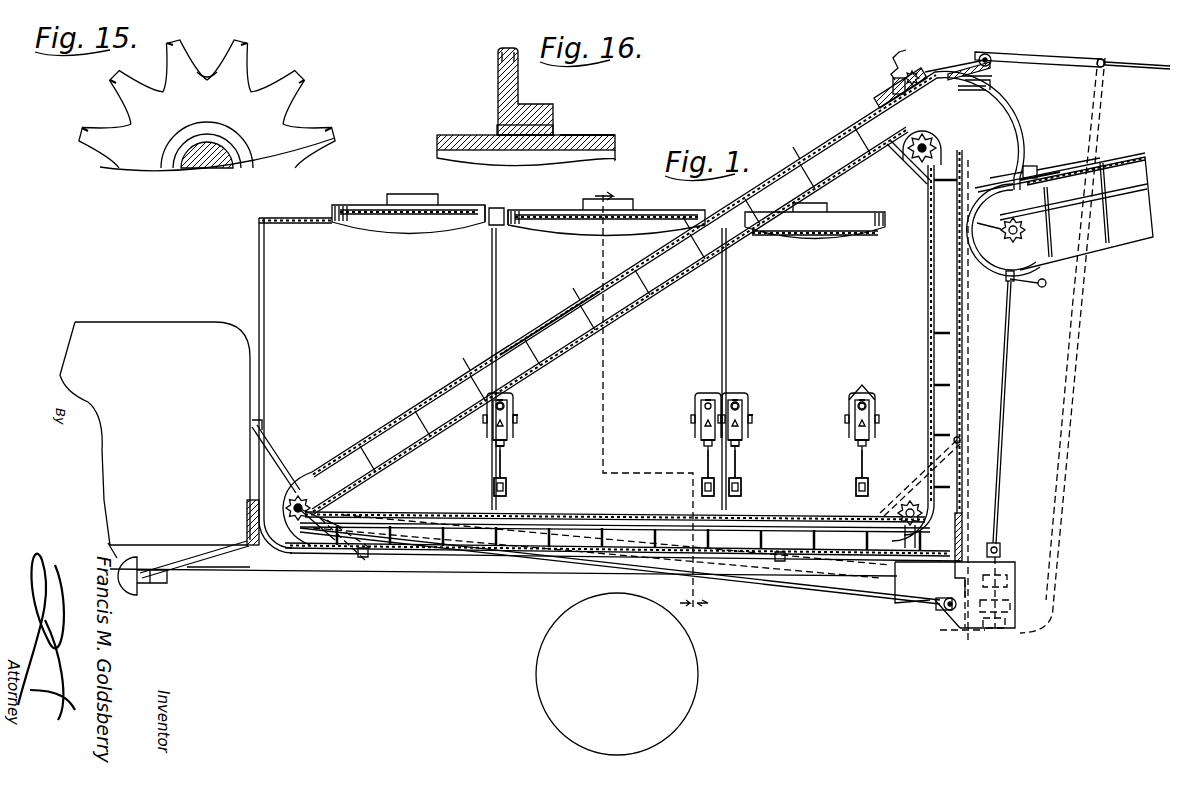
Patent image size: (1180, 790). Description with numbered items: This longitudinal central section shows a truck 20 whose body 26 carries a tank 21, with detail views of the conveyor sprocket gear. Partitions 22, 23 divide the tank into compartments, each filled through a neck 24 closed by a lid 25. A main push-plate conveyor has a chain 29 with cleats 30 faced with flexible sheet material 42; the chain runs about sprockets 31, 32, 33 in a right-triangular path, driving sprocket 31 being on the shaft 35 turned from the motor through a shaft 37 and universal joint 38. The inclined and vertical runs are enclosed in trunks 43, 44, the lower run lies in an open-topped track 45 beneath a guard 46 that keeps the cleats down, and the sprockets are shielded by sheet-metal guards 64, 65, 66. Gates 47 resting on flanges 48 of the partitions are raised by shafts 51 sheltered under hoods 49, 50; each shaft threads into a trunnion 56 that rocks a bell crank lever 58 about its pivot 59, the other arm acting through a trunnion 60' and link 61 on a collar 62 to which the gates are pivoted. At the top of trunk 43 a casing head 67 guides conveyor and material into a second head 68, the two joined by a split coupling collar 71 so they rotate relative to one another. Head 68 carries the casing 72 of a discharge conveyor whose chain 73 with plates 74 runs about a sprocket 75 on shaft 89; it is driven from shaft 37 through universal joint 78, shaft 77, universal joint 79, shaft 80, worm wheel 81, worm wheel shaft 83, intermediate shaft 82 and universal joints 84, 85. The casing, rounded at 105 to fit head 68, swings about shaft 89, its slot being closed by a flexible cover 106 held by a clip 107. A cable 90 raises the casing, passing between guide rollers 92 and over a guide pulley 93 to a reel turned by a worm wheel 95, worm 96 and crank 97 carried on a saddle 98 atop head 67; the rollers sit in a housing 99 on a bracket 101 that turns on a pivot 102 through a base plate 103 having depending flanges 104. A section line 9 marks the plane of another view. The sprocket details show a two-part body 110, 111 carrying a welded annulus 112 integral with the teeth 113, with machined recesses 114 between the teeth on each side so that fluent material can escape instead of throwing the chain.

In FIG. 1, the section line 9- 9 is at (651, 402).
In FIG. 1, the truck 20 is at (108, 332).
In FIG. 1, the tank 21 is at (259, 282).
In FIG. 1, the partition 22 is at (492, 333).
In FIG. 1, the partition 23 is at (722, 336).
In FIG. 1, the neck 24 is at (336, 210).
In FIG. 1, the lid 25 is at (358, 198).
In FIG. 1, the body of the truck 26 is at (963, 520).
In FIG. 1, the chain 29 is at (453, 403).
In FIG. 1, the cleats 30 is at (808, 170).
In FIG. 1, the sprocket 31 is at (330, 507).
In FIG. 1, the sprocket 32 is at (905, 172).
In FIG. 1, the sprocket 33 is at (902, 506).
In FIG. 1, the shaft 35 is at (298, 520).
In FIG. 1, the shaft 37 is at (196, 578).
In FIG. 1, the universal joint 38 is at (152, 586).
In FIG. 1, the flexible sheet material 42 is at (381, 428).
In FIG. 1, the trunk 43 is at (547, 329).
In FIG. 1, the trunk 44 is at (928, 361).
In FIG. 1, the open-topped track 45 is at (800, 560).
In FIG. 1, the guard 46 is at (420, 512).
In FIG. 1, the gates 47 is at (565, 524).
In FIG. 1, the flanges 48 is at (465, 518).
In FIG. 1, the hood 49 is at (514, 398).
In FIG. 1, the hood 50 is at (850, 396).
In FIG. 1, the shaft 51 is at (514, 410).
In FIG. 1, the trunnion 56 is at (512, 395).
In FIG. 1, the bell crank lever 58 is at (514, 437).
In FIG. 1, the pivot 59 is at (518, 419).
In FIG. 1, the trunnion 60' is at (613, 453).
In FIG. 1, the link 61 is at (503, 462).
In FIG. 1, the collar 62 is at (508, 484).
In FIG. 1, the guard 64 is at (272, 452).
In FIG. 1, the guard 65 is at (918, 470).
In FIG. 1, the guard 66 is at (908, 160).
In FIG. 1, the casing head 67 is at (1012, 148).
In FIG. 1, the conveyor head 68 is at (934, 214).
In FIG. 1, the split coupling collar 71 is at (1030, 165).
In FIG. 1, the casing 72 is at (1150, 238).
In FIG. 1, the endless chain 73 is at (1140, 188).
In FIG. 1, the plates 74 is at (1126, 158).
In FIG. 1, the sprocket 75 is at (1040, 175).
In FIG. 1, the shaft 77 is at (868, 595).
In FIG. 1, the universal joint 78 is at (327, 520).
In FIG. 1, the universal joint 79 is at (947, 610).
In FIG. 1, the shaft 80 is at (953, 630).
In FIG. 1, the worm wheel 81 is at (1010, 592).
In FIG. 1, the intermediate shaft 82 is at (1002, 453).
In FIG. 1, the worm wheel shaft 83 is at (1000, 565).
In FIG. 1, the universal joint 84 is at (1000, 542).
In FIG. 1, the universal joint 85 is at (1012, 285).
In FIG. 1, the shaft 89 is at (1046, 285).
In FIG. 1, the cable 90 is at (1077, 378).
In FIG. 1, the guide rollers 92 is at (1104, 62).
In FIG. 1, the guide pulley 93 is at (996, 58).
In FIG. 1, the worm wheel 95 is at (914, 72).
In FIG. 1, the worm 96 is at (892, 87).
In FIG. 1, the crank 97 is at (897, 56).
In FIG. 1, the saddle 98 is at (890, 102).
In FIG. 1, the housing 99 is at (1068, 56).
In FIG. 1, the bracket 101 is at (993, 77).
In FIG. 1, the pivot 102 is at (963, 62).
In FIG. 1, the base plate 103 is at (955, 64).
In FIG. 1, the depending flanges 104 is at (985, 90).
In FIG. 1, the rounded rear end 105 is at (1012, 244).
In FIG. 1, the flexible cover 106 is at (1118, 162).
In FIG. 1, the clip 107 is at (1040, 170).
In FIG. 15, the sprocket body part 110 is at (242, 158).
In FIG. 16, the sprocket body part 110 is at (456, 140).
In FIG. 16, the sprocket body part 111 is at (604, 140).
In FIG. 16, the annulus 112 is at (553, 114).
In FIG. 15, the teeth 113 is at (287, 86).
In FIG. 16, the teeth 113 is at (499, 52).
In FIG. 15, the machined recesses 114 is at (207, 80).
In FIG. 16, the machined recesses 114 is at (498, 88).